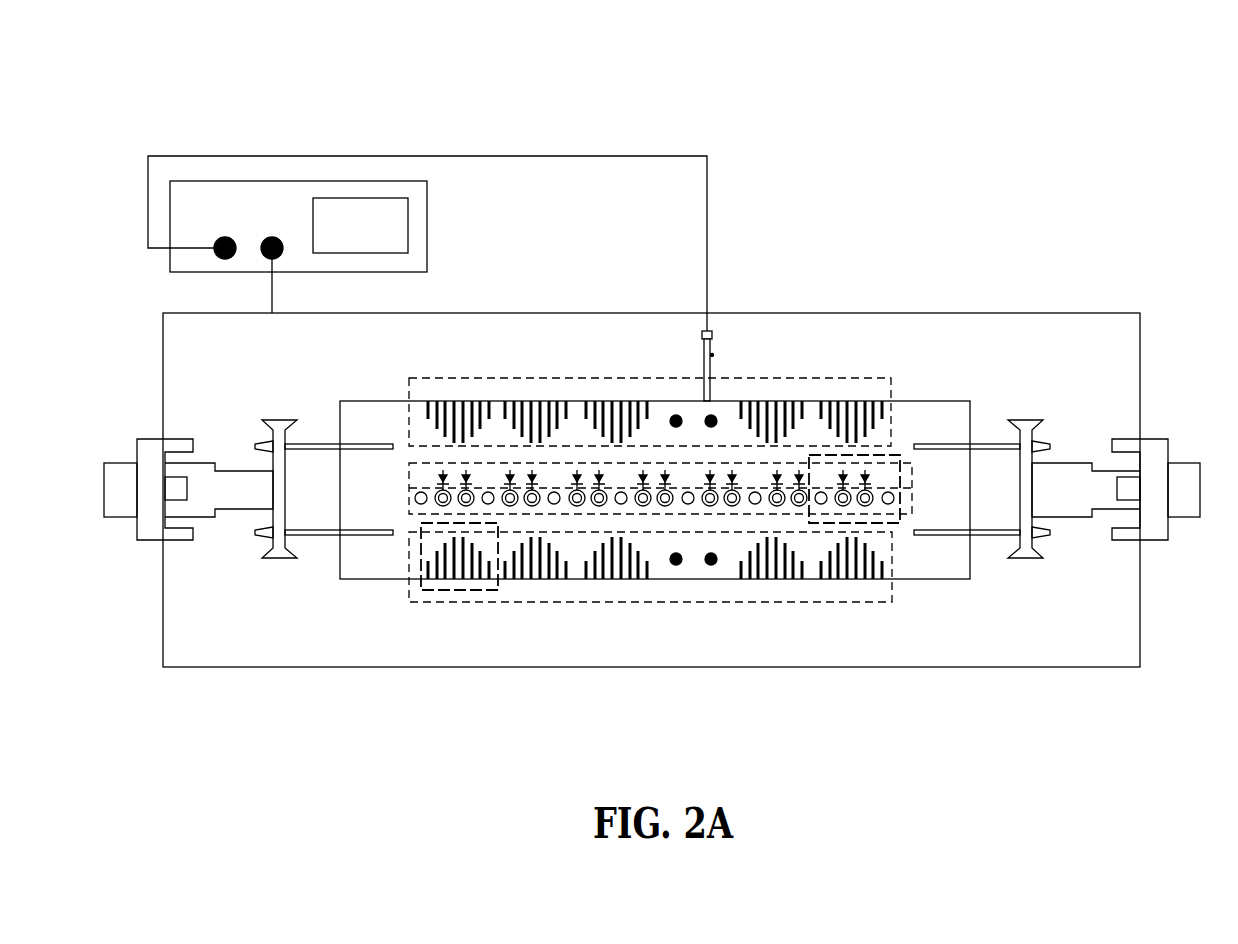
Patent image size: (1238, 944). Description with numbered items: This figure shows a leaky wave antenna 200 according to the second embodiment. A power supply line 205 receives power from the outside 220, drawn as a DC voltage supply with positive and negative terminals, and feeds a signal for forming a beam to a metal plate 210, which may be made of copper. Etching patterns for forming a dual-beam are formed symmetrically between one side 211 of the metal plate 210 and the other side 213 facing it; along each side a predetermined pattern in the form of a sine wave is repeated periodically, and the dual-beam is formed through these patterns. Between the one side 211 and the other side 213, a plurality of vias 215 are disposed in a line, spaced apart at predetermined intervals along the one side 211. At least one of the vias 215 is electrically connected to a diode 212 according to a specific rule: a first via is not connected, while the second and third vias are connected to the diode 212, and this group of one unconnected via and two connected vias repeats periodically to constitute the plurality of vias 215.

The leaky wave antenna 200 is at (189, 81).
The power supply line 205 is at (712, 356).
The metal plate 210 is at (662, 410).
The one side of the metal plate 211 is at (822, 377).
The diode 212 is at (912, 477).
The other side of the metal plate 213 is at (735, 602).
The plurality of vias 215 is at (912, 500).
The outside 220 is at (427, 224).